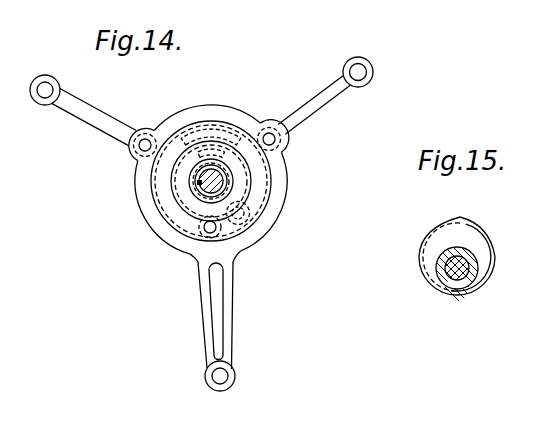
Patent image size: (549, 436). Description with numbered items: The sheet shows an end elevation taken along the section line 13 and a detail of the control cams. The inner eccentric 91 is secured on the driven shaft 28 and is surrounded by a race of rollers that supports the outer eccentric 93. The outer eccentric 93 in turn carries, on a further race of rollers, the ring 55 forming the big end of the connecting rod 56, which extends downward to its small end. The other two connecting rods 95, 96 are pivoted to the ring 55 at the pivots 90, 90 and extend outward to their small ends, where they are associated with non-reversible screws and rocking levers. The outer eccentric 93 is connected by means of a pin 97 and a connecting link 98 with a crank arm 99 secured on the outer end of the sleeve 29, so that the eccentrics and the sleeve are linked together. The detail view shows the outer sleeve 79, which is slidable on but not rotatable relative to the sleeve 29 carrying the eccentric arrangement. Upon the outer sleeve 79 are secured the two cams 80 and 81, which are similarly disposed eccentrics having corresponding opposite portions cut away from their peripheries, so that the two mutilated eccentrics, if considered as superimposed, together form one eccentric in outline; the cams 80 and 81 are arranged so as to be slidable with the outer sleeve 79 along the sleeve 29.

In FIG. 14, the section line 13 is at (207, 100).
In FIG. 14, the driven shaft 28 is at (212, 179).
In FIG. 15, the driven shaft 28 is at (473, 289).
In FIG. 15, the sleeve 29 is at (470, 259).
In FIG. 14, the ring 55 is at (222, 117).
In FIG. 14, the connecting rod 56 is at (232, 318).
In FIG. 15, the outer sleeve 79 is at (438, 274).
In FIG. 15, the cam 80 is at (425, 247).
In FIG. 15, the cam 81 is at (472, 224).
In FIG. 14, the pivot 90 is at (146, 136).
In FIG. 14, the inner eccentric 91 is at (210, 179).
In FIG. 14, the outer eccentric 93 is at (175, 212).
In FIG. 14, the connecting rod 95 is at (95, 110).
In FIG. 14, the connecting rod 96 is at (312, 105).
In FIG. 14, the pin 97 is at (209, 230).
In FIG. 14, the connecting link 98 is at (235, 230).
In FIG. 14, the crank arm 99 is at (245, 195).